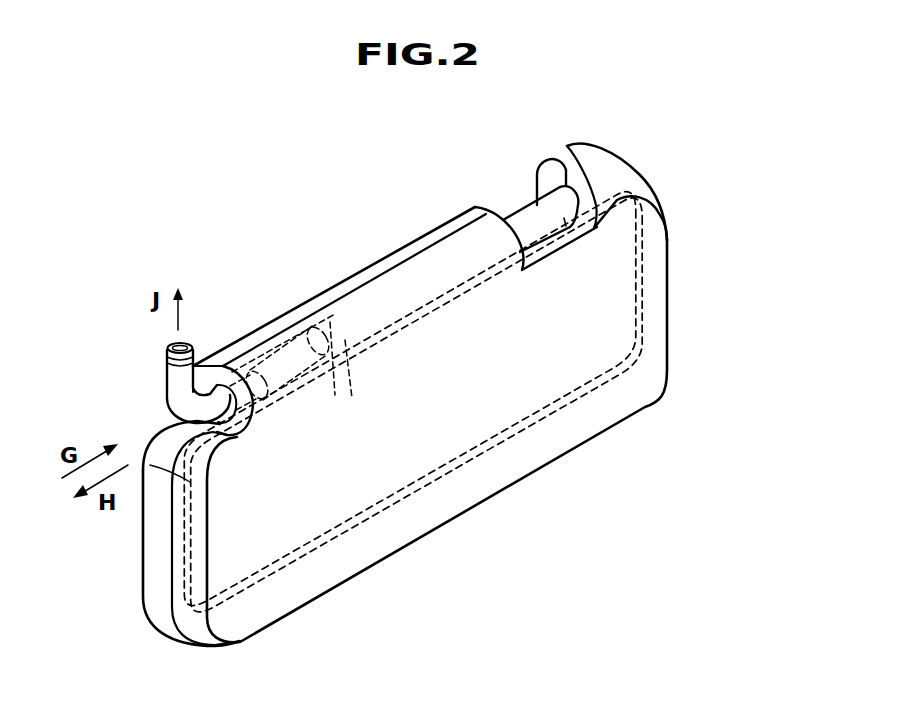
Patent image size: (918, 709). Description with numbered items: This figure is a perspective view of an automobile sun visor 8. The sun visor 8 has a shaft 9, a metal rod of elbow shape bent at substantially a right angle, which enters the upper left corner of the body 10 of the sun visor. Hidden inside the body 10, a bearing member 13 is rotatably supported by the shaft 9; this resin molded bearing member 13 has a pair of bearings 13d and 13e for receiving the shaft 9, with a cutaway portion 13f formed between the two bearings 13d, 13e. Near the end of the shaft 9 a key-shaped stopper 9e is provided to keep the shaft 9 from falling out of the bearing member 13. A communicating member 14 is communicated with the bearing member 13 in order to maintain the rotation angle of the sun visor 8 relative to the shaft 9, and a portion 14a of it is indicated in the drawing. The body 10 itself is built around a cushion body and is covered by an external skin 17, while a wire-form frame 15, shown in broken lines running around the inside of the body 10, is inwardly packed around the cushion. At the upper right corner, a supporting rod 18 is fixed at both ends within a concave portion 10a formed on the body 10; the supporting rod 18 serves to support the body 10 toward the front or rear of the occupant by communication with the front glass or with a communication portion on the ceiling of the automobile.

The sun visor 8 is at (696, 248).
The shaft 9 is at (173, 403).
The stopper 9e is at (302, 320).
The body of the sun visor 10 is at (662, 353).
The concave portion 10a is at (542, 176).
The bearing member 13 is at (328, 405).
The bearing 13d is at (220, 330).
The bearing 13e is at (333, 322).
The cutaway portion 13f is at (330, 383).
The communicating member 14 is at (260, 327).
The end portion of holding member 14a is at (283, 330).
The wire-form frame 15 is at (560, 410).
The external skin 17 is at (267, 607).
The supporting rod 18 is at (520, 221).